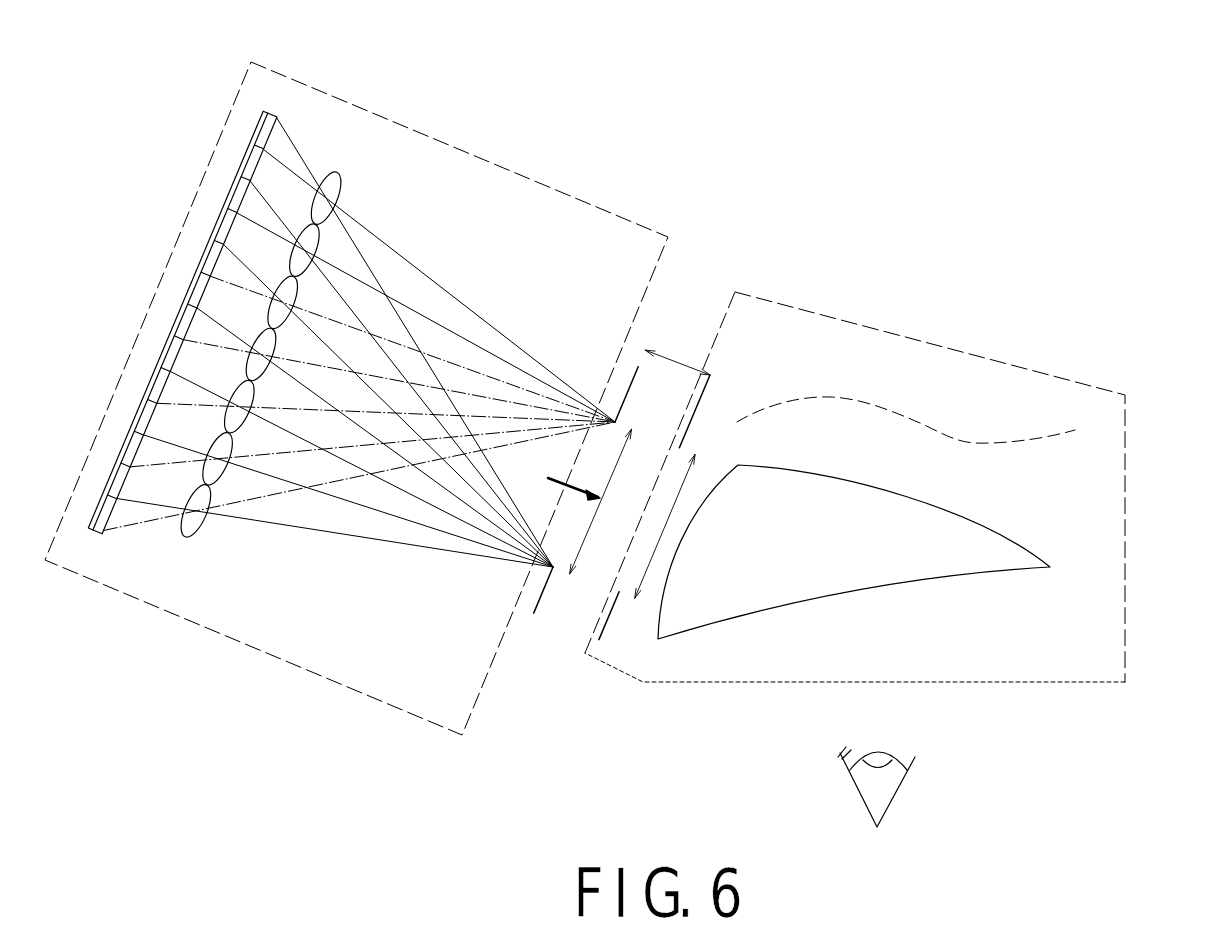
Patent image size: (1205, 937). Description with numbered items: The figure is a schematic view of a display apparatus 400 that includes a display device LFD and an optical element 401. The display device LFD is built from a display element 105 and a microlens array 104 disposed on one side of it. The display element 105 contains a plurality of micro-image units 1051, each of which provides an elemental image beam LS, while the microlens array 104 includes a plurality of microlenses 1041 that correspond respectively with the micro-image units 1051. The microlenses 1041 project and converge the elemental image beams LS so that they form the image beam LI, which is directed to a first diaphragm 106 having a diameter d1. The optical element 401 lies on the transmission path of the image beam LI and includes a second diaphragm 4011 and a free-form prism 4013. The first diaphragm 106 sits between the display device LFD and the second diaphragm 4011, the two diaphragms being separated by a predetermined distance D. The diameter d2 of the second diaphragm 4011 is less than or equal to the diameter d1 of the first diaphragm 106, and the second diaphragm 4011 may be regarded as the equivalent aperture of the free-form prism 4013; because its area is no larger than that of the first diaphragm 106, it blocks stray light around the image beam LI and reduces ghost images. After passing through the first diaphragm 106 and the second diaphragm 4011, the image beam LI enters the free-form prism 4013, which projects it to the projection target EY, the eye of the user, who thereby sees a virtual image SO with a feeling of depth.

The display element 105 is at (182, 271).
The micro-image unit 1051 is at (251, 171).
The microlens array 104 is at (332, 295).
The microlens 1041 is at (340, 194).
The display device LFD is at (537, 181).
The elemental image beam LS is at (470, 303).
The first diaphragm 106 is at (536, 614).
The diameter of the first diaphragm d1 is at (606, 501).
The image beam LI is at (553, 473).
The predetermined distance D is at (677, 344).
The optical element 401 is at (850, 521).
The second diaphragm 4011 is at (601, 628).
The diameter of the second diaphragm d2 is at (684, 483).
The free-form prism 4013 is at (733, 600).
The virtual image SO is at (980, 437).
The projection target EY is at (887, 793).
The display apparatus 400 is at (1195, 802).